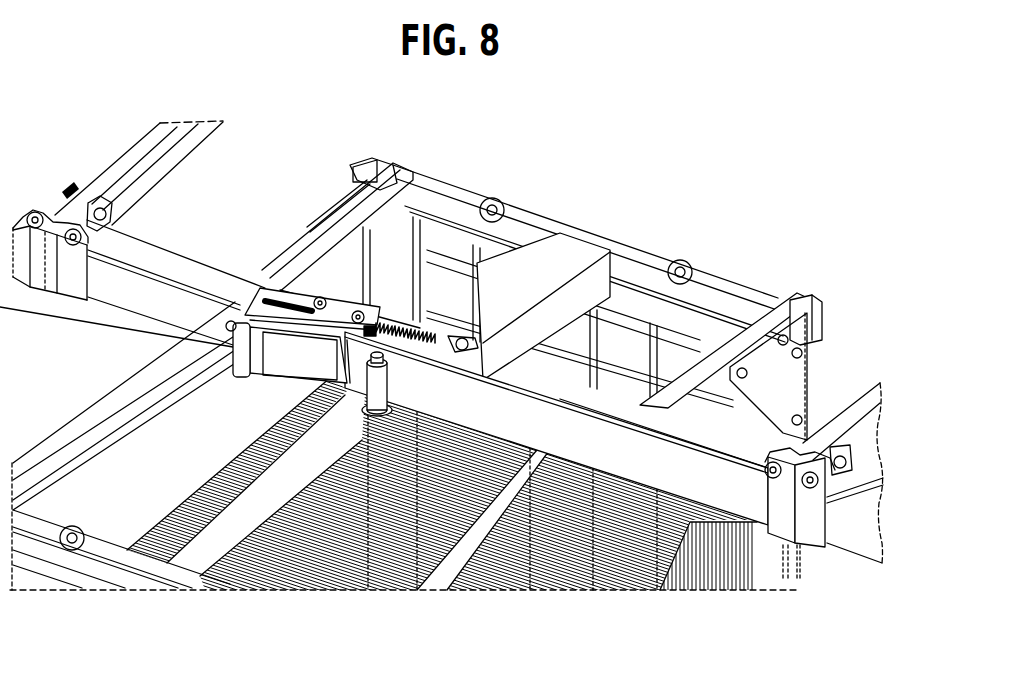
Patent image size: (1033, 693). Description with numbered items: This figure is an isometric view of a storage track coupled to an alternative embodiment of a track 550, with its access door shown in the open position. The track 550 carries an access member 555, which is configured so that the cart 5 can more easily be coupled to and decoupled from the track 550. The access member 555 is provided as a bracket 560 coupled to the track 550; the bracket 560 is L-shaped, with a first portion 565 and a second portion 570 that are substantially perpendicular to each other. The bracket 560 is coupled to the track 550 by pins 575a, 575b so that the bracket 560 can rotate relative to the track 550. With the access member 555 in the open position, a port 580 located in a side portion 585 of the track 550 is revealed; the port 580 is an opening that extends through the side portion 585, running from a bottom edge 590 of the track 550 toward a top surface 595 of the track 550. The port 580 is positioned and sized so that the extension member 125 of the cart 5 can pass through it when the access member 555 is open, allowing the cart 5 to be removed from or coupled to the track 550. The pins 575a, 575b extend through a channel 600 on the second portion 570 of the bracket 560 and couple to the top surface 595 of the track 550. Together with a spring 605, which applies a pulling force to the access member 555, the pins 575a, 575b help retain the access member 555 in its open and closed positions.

The cart 5 is at (748, 270).
The extension member 125 is at (380, 420).
The track 550 is at (100, 135).
The access member 555 is at (360, 313).
The bracket 560 is at (227, 370).
The first portion 565 is at (293, 357).
The second portion 570 is at (275, 290).
The pin 575a is at (265, 318).
The pin 575b is at (333, 290).
The port 580 is at (347, 380).
The side portion 585 is at (550, 436).
The bottom edge 590 is at (533, 460).
The top surface 595 is at (646, 423).
The channel 600 is at (317, 325).
The spring 605 is at (447, 332).